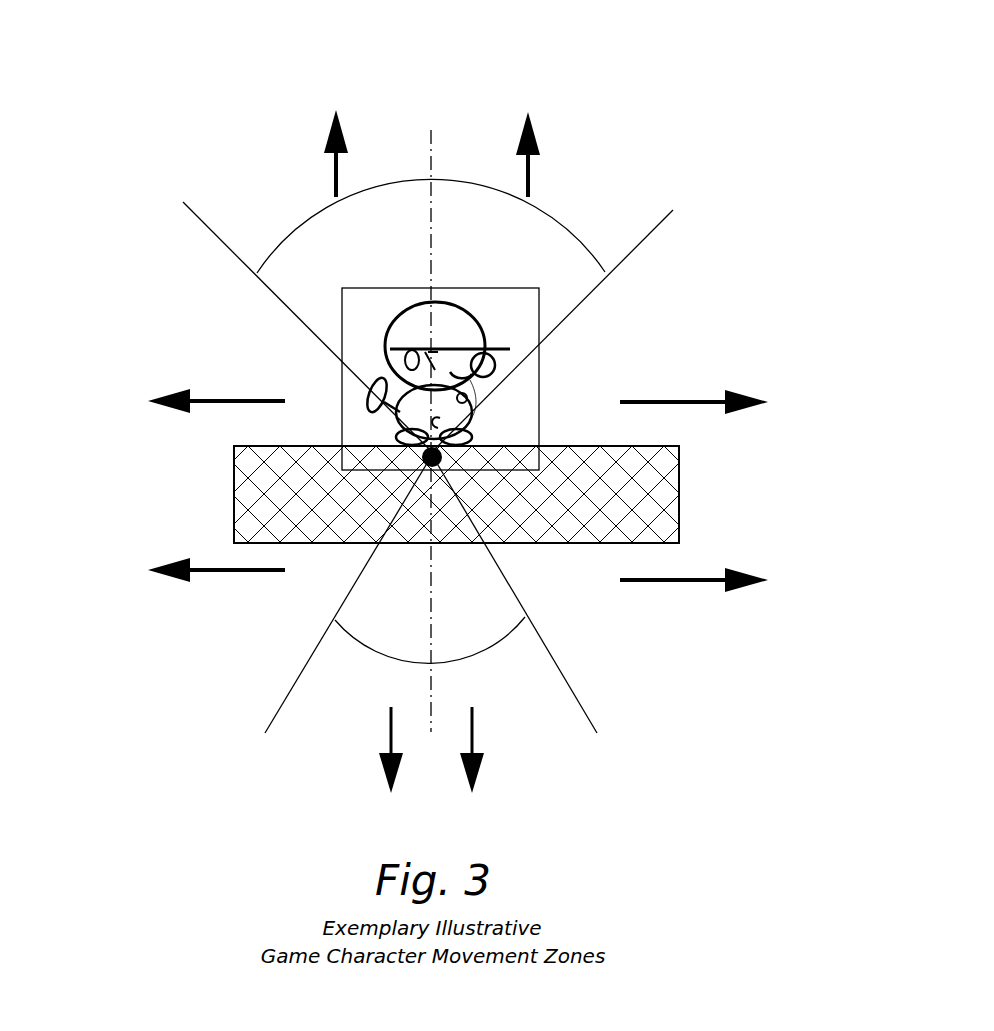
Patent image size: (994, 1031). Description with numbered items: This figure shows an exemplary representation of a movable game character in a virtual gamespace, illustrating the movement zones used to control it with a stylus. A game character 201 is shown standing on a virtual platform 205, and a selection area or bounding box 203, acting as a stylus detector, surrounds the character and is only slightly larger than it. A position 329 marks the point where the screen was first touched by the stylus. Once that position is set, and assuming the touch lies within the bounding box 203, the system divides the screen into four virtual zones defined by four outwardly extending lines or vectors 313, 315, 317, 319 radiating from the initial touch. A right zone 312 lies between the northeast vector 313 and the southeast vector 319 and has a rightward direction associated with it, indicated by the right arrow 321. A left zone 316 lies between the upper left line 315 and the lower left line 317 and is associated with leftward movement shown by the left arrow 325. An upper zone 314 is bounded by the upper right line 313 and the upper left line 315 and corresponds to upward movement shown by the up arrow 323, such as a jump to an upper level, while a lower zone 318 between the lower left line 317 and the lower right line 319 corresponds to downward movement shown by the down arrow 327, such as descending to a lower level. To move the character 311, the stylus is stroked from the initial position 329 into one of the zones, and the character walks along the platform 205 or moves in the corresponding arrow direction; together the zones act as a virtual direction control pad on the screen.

The game character 201 is at (455, 302).
The selection area or bounding box 203 is at (360, 287).
The virtual platform 205 is at (682, 505).
The character 311 is at (480, 418).
The right zone 312 is at (718, 335).
The vector (upper right line) 313 is at (621, 262).
The upper zone 314 is at (378, 145).
The upper left line 315 is at (225, 245).
The left zone 316 is at (260, 620).
The lower left line 317 is at (307, 668).
The lower zone 318 is at (325, 705).
The vector (lower right line) 319 is at (560, 665).
The right arrow 321 is at (740, 413).
The up arrow 323 is at (537, 132).
The left arrow 325 is at (175, 410).
The down arrow 327 is at (482, 770).
The position (initial touch position) 329 is at (420, 452).